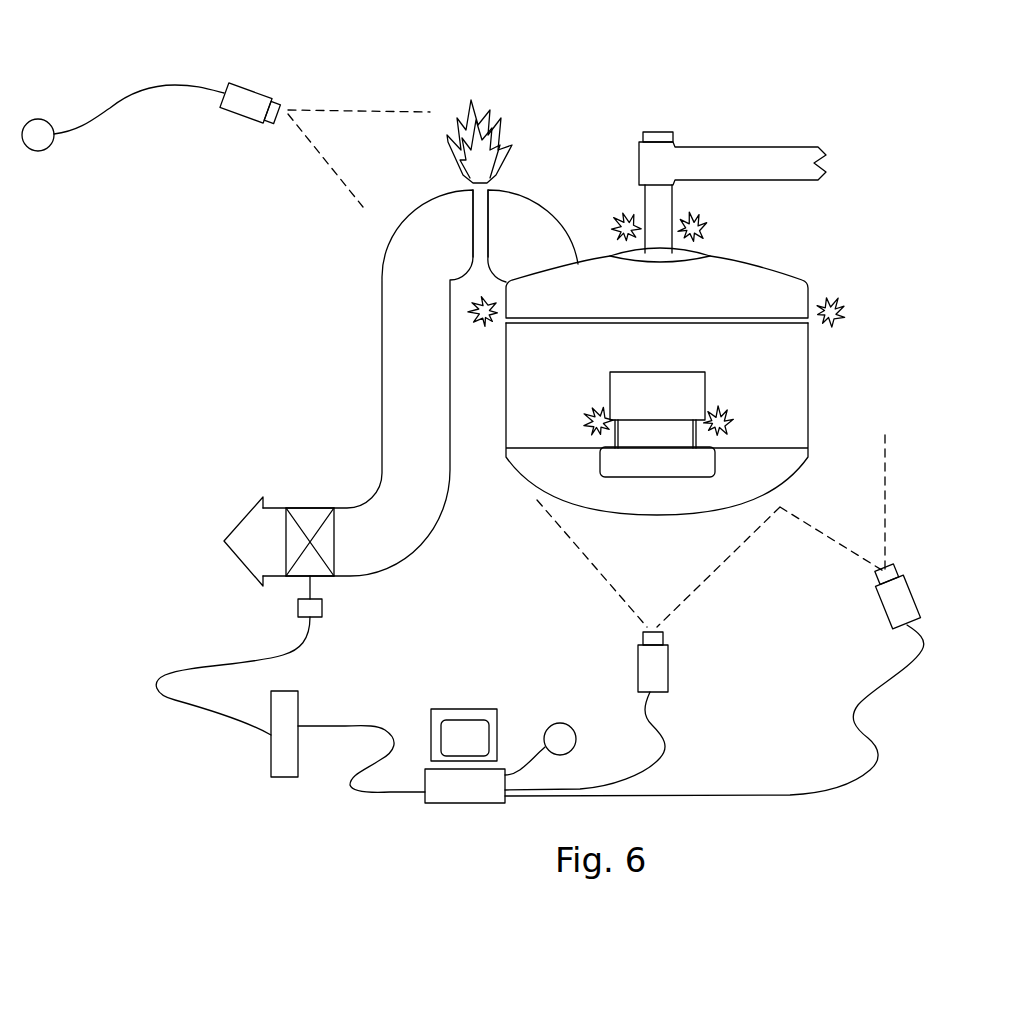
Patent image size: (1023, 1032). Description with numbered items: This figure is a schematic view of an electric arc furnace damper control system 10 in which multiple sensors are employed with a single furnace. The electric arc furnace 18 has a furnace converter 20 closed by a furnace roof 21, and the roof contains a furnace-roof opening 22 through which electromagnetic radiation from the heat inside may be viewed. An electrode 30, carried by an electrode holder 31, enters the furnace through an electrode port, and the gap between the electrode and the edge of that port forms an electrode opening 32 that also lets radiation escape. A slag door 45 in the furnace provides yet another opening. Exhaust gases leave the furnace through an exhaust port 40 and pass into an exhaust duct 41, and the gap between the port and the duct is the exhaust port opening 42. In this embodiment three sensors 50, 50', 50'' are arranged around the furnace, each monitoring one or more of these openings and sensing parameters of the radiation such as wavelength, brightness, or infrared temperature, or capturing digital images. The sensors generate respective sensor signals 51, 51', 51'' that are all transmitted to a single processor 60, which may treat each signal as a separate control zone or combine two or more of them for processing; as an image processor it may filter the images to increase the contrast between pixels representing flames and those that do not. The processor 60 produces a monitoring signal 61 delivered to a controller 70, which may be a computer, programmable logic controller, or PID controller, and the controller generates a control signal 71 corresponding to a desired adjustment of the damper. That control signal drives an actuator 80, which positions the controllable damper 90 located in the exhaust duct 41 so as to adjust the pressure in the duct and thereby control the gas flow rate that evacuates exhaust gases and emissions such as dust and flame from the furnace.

The furnace damper control system 10 is at (963, 188).
The electric arc furnace 18 is at (714, 356).
The furnace converter 20 is at (808, 395).
The furnace roof 21 is at (755, 258).
The furnace-roof opening 22 is at (779, 315).
The electrode 30 is at (643, 207).
The electrode holder 31 is at (748, 160).
The electrode opening 32 is at (706, 231).
The exhaust port 40 is at (533, 200).
The exhaust duct 41 is at (382, 372).
The exhaust port opening 42 is at (475, 236).
The slag door 45 is at (707, 395).
The sensor 50 is at (685, 658).
The sensor 50' is at (920, 588).
The sensor 50'' is at (228, 130).
The sensor signal 51 is at (618, 741).
The sensor signal 51' is at (732, 710).
The sensor signal 51'' is at (123, 147).
The processor 60 is at (470, 708).
The monitoring signal 61 is at (377, 726).
The controller 70 is at (298, 708).
The control signal 71 is at (233, 664).
The actuator 80 is at (322, 608).
The controllable damper 90 is at (305, 515).